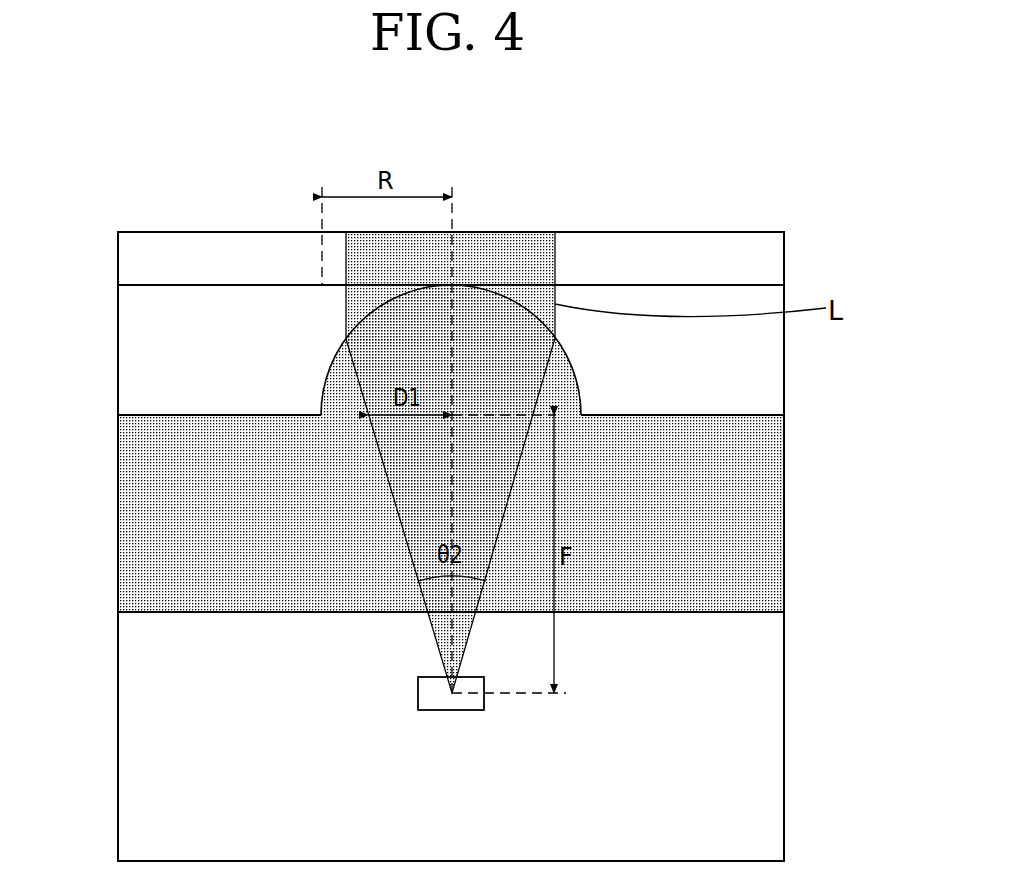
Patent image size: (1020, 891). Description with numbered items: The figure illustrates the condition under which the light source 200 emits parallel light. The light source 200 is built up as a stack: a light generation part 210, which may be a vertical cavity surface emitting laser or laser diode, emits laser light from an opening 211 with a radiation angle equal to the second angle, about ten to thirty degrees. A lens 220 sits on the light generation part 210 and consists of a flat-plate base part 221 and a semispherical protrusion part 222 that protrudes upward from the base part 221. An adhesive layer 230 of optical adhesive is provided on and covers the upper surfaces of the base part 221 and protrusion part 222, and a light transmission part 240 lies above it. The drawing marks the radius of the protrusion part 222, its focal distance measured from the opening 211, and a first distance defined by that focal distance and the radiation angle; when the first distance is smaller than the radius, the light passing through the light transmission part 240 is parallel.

The light source 200 is at (79, 141).
The light transmission part 240 is at (130, 259).
The adhesive layer 230 is at (130, 349).
The lens 220 is at (527, 462).
The protrusion part 222 is at (565, 387).
The base part 221 is at (773, 445).
The light generation part 210 is at (130, 645).
The opening 211 is at (418, 686).